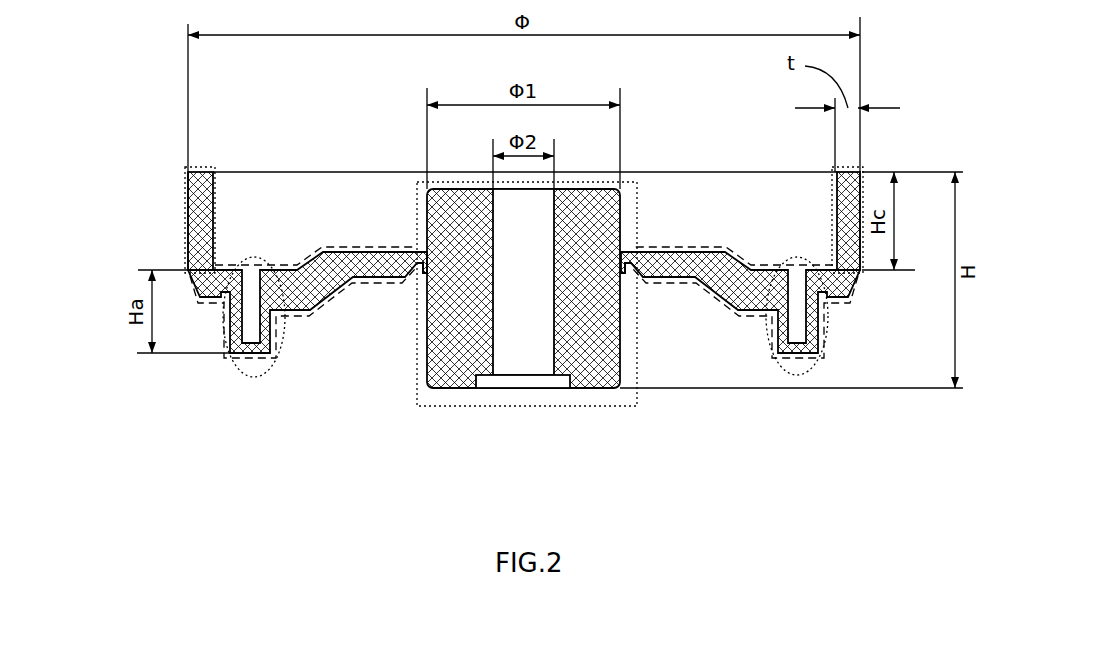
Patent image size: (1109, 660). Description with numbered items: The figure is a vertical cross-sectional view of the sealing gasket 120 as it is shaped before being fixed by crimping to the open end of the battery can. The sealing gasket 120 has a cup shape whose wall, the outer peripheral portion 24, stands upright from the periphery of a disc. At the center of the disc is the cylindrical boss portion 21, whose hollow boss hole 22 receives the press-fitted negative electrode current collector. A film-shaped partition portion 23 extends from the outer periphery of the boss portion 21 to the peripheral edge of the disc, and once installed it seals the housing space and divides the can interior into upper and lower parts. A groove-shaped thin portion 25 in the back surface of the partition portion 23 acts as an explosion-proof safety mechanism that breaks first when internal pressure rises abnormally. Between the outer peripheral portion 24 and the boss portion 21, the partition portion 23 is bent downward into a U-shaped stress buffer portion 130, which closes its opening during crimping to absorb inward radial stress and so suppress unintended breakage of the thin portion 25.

The sealing gasket 120 is at (166, 94).
The boss portion 21 is at (565, 407).
The boss hole 22 is at (515, 356).
The partition portion 23 is at (323, 312).
The outer peripheral portion 24 is at (186, 167).
The thin portion 25 is at (420, 274).
The stress buffer portion 130 is at (246, 378).